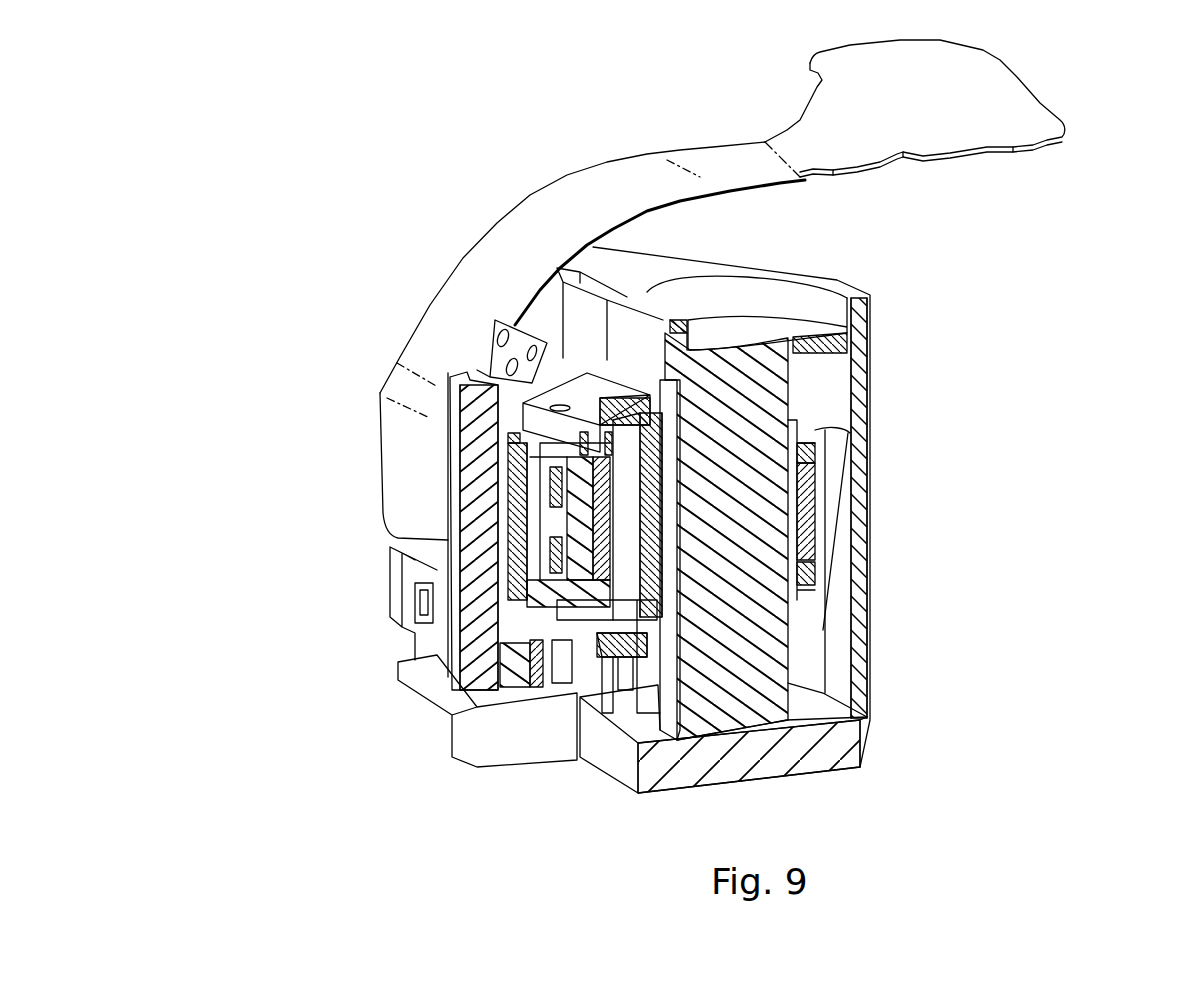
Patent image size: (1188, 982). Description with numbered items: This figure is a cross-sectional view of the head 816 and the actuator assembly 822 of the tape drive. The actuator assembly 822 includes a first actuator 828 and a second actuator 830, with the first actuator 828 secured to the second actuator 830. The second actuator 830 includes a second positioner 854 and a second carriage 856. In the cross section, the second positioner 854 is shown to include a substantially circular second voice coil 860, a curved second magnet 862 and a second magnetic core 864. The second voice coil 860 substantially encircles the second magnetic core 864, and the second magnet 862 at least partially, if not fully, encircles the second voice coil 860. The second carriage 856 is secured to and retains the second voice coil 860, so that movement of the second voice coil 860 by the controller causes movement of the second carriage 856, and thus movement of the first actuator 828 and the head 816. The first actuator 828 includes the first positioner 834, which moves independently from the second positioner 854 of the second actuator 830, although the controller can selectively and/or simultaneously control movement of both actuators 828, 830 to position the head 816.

The actuator assembly 822 is at (987, 272).
The second actuator 830 is at (879, 380).
The head 816 is at (465, 552).
The first positioner 834 is at (535, 510).
The second magnetic core 864 is at (752, 640).
The second positioner 854 is at (838, 570).
The second magnet 862 is at (839, 483).
The second carriage 856 is at (816, 452).
The second voice coil 860 is at (808, 517).
The first actuator 828 is at (536, 692).